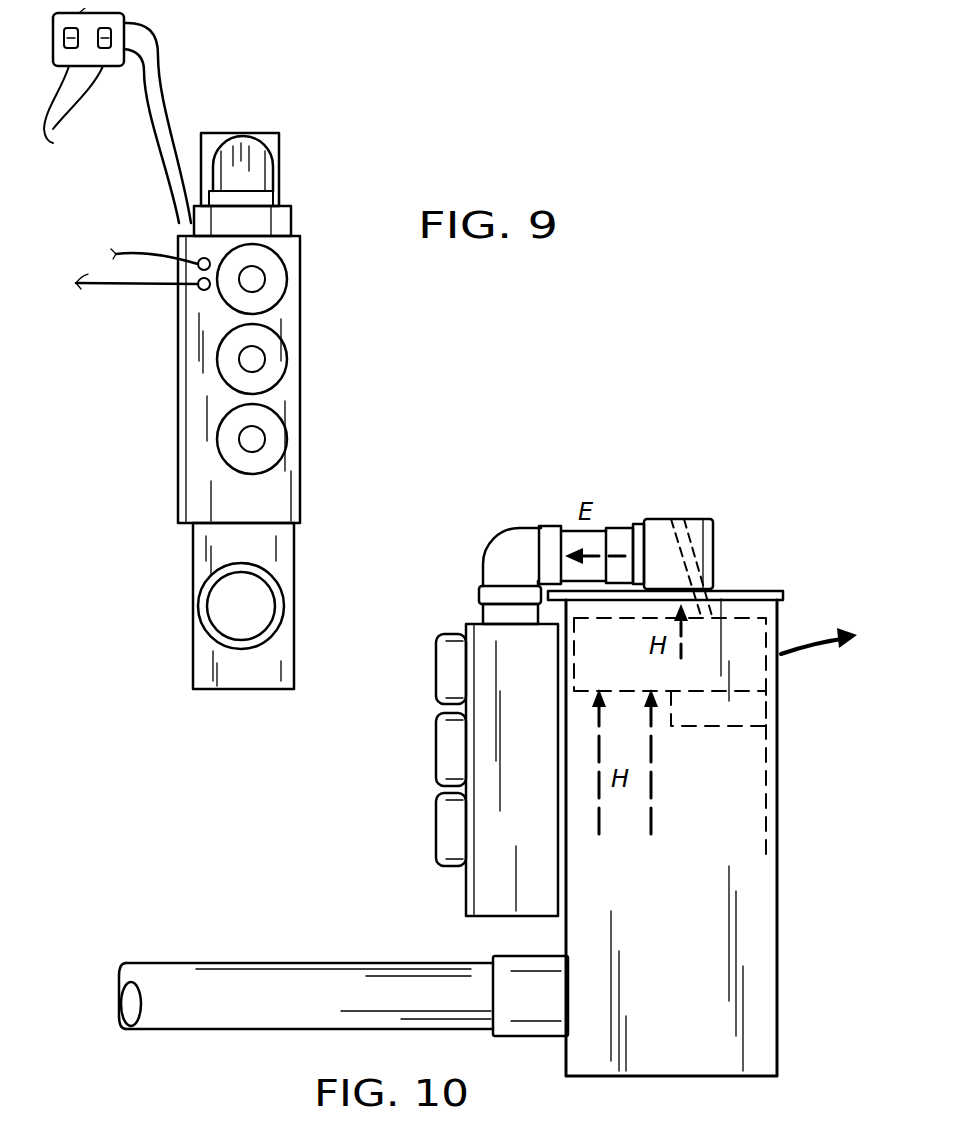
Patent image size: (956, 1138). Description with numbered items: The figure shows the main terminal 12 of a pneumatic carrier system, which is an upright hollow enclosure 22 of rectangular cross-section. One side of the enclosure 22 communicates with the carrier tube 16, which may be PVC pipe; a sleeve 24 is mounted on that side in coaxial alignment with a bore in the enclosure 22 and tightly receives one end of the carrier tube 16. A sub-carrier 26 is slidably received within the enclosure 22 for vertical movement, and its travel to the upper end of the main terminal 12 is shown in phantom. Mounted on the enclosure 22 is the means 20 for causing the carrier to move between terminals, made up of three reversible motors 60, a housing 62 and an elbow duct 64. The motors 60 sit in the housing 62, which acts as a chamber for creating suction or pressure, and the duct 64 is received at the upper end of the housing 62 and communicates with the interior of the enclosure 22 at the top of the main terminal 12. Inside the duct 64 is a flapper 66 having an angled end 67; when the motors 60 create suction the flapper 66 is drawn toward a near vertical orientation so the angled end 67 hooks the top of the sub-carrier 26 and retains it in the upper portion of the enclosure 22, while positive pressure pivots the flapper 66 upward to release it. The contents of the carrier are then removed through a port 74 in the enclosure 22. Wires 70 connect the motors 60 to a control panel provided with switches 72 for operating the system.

In FIG. 9, the main terminal 12 is at (333, 205).
In FIG. 10, the main terminal 12 is at (766, 511).
In FIG. 10, the carrier tube 16 is at (200, 962).
In FIG. 9, the means for causing carrier to move between terminals 20 is at (143, 222).
In FIG. 10, the enclosure 22 is at (767, 928).
In FIG. 9, the sleeve 24 is at (203, 633).
In FIG. 10, the sleeve 24 is at (540, 1004).
In FIG. 10, the sub-carrier 26 is at (753, 615).
In FIG. 9, the motors 60 is at (287, 275).
In FIG. 10, the motors 60 is at (435, 690).
In FIG. 9, the housing 62 is at (299, 522).
In FIG. 10, the housing 62 is at (535, 791).
In FIG. 9, the duct 64 is at (268, 180).
In FIG. 10, the duct 64 is at (545, 492).
In FIG. 10, the flapper 66 is at (716, 498).
In FIG. 10, the angled end 67 is at (705, 607).
In FIG. 9, the wires 70 is at (152, 95).
In FIG. 9, the switches 72 is at (84, 83).
In FIG. 10, the port 74 is at (777, 672).